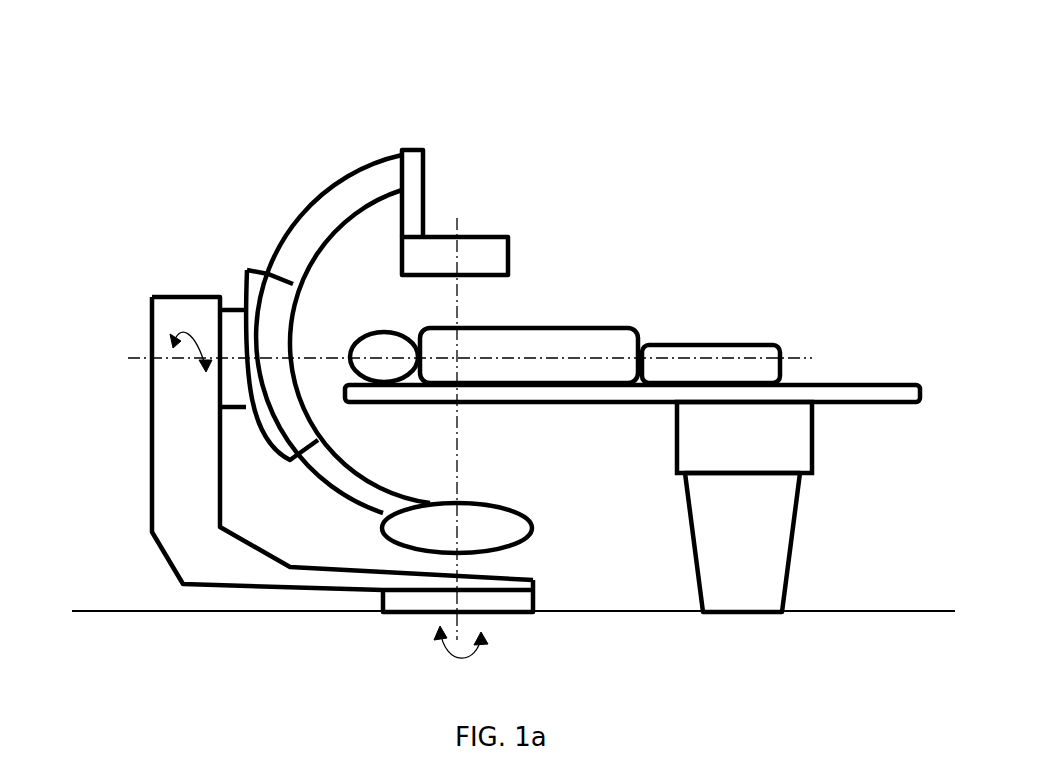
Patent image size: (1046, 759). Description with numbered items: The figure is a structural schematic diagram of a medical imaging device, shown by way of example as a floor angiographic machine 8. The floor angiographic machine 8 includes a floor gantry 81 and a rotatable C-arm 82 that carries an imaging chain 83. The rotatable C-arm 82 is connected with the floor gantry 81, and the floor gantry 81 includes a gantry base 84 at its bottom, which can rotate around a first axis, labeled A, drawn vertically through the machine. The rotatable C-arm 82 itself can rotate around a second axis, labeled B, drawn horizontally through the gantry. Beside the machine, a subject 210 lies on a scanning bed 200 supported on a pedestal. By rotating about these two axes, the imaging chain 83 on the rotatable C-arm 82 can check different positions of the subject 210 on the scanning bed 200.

The floor angiographic machine 8 is at (338, 351).
The floor gantry 81 is at (180, 437).
The rotatable C-arm 82 is at (347, 192).
The imaging chain 83 is at (482, 257).
The gantry base 84 is at (503, 597).
The scanning bed 200 is at (783, 397).
The subject 210 is at (577, 347).